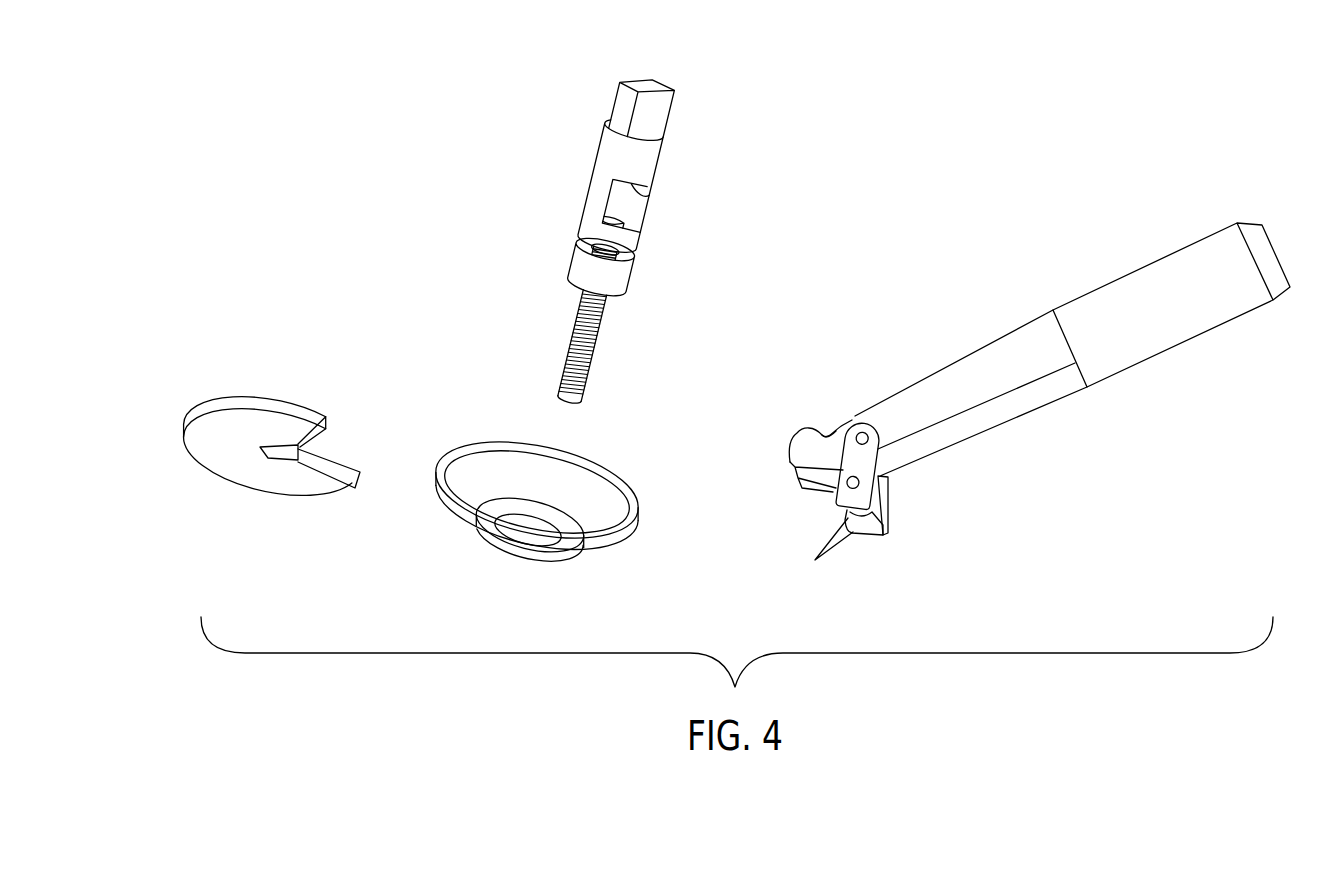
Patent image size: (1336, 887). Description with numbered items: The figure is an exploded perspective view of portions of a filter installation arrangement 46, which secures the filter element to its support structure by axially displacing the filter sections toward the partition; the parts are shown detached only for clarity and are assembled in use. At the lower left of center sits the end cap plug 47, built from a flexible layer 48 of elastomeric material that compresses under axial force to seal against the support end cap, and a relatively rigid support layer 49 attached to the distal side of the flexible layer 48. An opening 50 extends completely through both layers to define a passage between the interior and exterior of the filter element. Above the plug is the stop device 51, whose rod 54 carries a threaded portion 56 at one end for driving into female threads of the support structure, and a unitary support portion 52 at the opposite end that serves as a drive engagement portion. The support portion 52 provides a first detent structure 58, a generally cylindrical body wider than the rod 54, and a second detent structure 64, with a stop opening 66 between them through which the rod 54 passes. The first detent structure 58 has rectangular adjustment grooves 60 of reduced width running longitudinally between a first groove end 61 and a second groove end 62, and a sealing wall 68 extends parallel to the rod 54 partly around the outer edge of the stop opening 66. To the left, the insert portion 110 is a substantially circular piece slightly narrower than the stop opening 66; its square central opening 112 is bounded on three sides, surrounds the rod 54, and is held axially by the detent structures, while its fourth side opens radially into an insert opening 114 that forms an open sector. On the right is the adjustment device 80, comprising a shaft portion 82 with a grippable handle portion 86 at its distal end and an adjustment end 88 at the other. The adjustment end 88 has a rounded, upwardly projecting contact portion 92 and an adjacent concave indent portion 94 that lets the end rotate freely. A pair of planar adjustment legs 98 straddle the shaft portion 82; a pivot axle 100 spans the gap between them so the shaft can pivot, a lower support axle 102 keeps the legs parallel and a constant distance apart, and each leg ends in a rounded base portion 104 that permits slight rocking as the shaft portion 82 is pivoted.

The filter installation arrangement 46 is at (448, 307).
The end cap plug 47 is at (535, 511).
The flexible layer 48 is at (632, 525).
The support layer 49 is at (619, 483).
The opening 50 is at (530, 540).
The stop device 51 is at (616, 213).
The support portion 52 is at (616, 99).
The rod 54 is at (600, 325).
The threaded portion 56 is at (585, 379).
The first detent structure 58 is at (600, 154).
The adjustment groove 60 is at (632, 205).
The first groove end 61 is at (648, 192).
The second groove end 62 is at (638, 226).
The second detent structure 64 is at (570, 262).
The stop opening 66 is at (568, 239).
The sealing wall 68 is at (623, 256).
The adjustment device 80 is at (1013, 399).
The shaft portion 82 is at (1028, 332).
The handle portion 86 is at (1170, 255).
The adjustment end 88 is at (790, 460).
The contact portion 92 is at (806, 428).
The indent portion 94 is at (830, 438).
The adjustment legs 98 is at (829, 557).
The pivot axle 100 is at (864, 424).
The support axle 102 is at (848, 490).
The base portion 104 is at (876, 534).
The insert portion 110 is at (269, 442).
The central opening 112 is at (277, 462).
The insert opening 114 is at (326, 480).